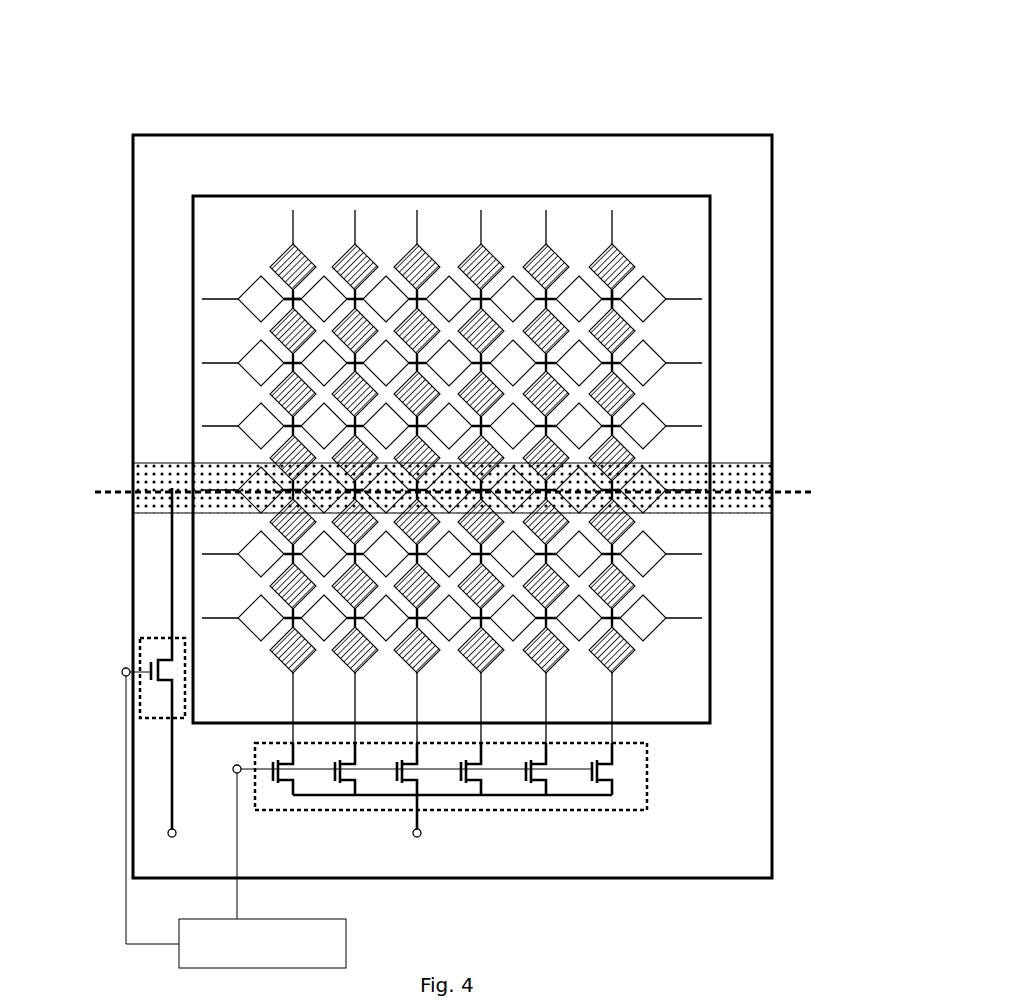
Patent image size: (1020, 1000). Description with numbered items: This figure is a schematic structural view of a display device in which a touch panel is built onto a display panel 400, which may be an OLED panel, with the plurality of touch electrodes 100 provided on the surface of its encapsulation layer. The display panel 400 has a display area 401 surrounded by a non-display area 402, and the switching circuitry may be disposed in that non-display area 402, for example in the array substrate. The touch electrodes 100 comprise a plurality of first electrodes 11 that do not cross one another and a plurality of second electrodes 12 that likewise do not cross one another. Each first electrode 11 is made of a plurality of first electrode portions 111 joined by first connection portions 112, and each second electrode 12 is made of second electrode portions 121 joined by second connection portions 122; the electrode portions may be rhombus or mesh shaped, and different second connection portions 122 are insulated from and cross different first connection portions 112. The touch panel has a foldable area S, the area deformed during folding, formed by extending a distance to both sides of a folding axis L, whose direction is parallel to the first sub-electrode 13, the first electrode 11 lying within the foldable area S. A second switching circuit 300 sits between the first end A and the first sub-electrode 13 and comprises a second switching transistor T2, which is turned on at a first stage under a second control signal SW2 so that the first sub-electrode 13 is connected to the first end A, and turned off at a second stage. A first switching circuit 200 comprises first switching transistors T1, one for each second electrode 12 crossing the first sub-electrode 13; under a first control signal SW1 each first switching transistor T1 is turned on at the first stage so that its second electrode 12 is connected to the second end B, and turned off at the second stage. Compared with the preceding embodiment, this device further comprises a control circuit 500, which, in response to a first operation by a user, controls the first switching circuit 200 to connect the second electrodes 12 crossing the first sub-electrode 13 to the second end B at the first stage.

The display panel 400 is at (402, 439).
The display area 401 is at (238, 238).
The non-display area 402 is at (288, 150).
The touch electrodes 100 is at (463, 421).
The first electrodes 11 is at (357, 300).
The first electrode portions 111 is at (258, 305).
The first connection portions 112 is at (287, 305).
The second electrodes 12 is at (723, 386).
The second electrode portions 121 is at (620, 252).
The second connection portions 122 is at (627, 287).
The first sub-electrode 13 is at (225, 485).
The foldable area S is at (730, 480).
The folding axis L is at (742, 493).
The first switching circuit 200 is at (552, 827).
The first switching transistor T1 is at (458, 770).
The first control signal SW1 is at (392, 839).
The second end B is at (416, 830).
The second switching circuit 300 is at (122, 716).
The second switching transistor T2 is at (159, 658).
The second control signal SW2 is at (129, 803).
The first end A is at (171, 847).
The control circuit 500 is at (346, 940).